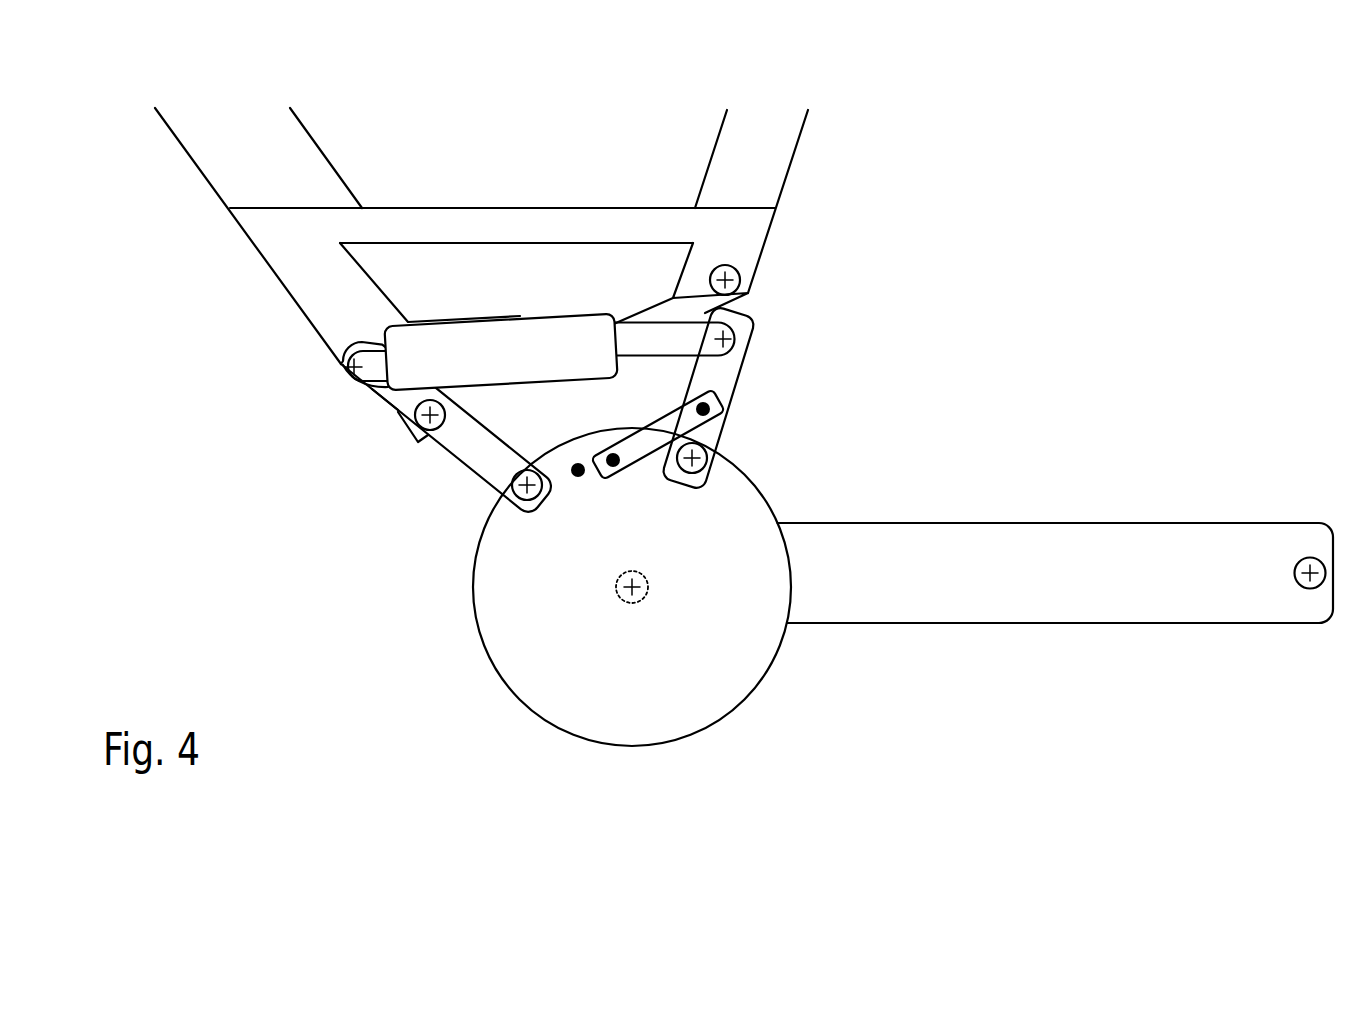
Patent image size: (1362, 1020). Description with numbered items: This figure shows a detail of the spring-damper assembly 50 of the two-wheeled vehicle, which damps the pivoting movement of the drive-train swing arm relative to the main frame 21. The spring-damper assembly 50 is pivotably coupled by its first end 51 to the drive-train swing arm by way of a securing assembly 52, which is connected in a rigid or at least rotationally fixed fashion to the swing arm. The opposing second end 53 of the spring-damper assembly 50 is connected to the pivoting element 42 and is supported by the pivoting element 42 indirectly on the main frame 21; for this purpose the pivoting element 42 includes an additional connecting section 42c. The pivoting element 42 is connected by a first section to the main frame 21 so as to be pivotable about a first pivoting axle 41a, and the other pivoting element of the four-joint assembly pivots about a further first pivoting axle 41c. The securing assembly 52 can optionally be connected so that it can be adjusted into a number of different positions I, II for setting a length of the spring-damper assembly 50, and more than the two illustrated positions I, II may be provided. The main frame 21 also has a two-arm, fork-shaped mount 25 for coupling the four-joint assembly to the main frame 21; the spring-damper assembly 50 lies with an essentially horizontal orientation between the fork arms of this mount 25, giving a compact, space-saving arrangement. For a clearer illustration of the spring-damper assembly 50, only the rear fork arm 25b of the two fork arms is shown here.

The main frame 21 is at (518, 207).
The fork-shaped mount 25 is at (775, 222).
The rear fork arm 25b is at (747, 252).
The first pivoting axle 41c is at (740, 283).
The spring-damper assembly 50 is at (403, 342).
The first end 51 is at (743, 340).
The securing assembly 52 is at (744, 390).
The second end 53 is at (345, 370).
The connecting section 42c is at (390, 398).
The first pivoting axle 41a is at (410, 427).
The pivoting element 42 is at (481, 466).
The position I is at (616, 468).
The position II is at (578, 478).